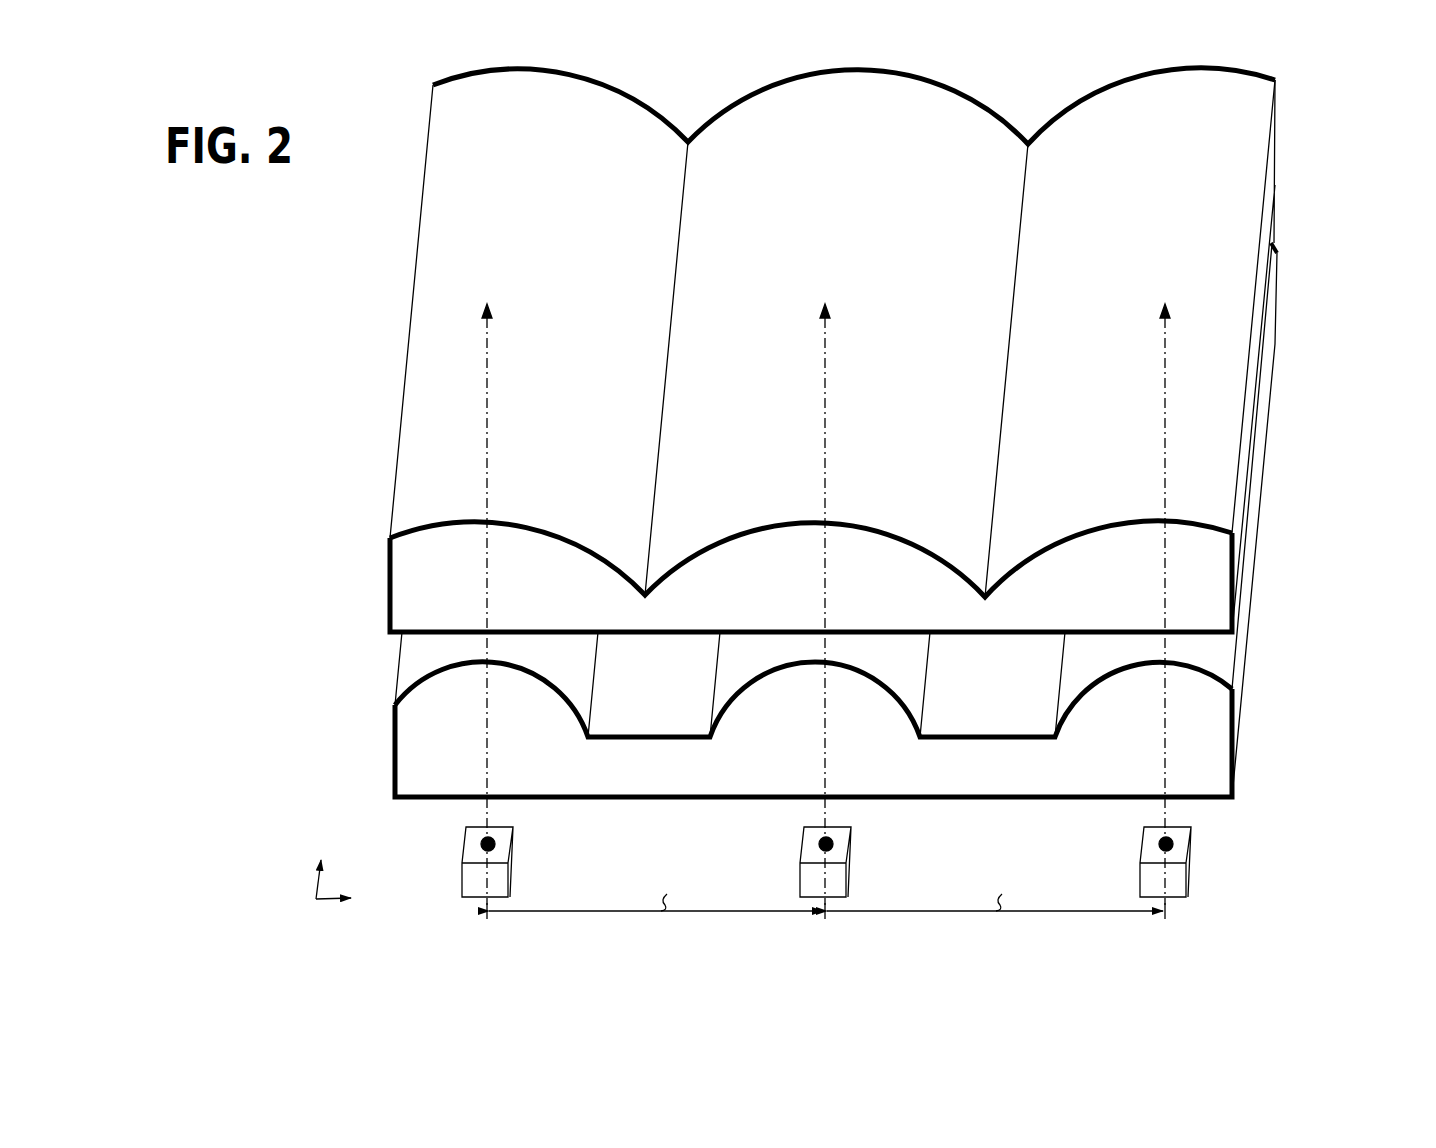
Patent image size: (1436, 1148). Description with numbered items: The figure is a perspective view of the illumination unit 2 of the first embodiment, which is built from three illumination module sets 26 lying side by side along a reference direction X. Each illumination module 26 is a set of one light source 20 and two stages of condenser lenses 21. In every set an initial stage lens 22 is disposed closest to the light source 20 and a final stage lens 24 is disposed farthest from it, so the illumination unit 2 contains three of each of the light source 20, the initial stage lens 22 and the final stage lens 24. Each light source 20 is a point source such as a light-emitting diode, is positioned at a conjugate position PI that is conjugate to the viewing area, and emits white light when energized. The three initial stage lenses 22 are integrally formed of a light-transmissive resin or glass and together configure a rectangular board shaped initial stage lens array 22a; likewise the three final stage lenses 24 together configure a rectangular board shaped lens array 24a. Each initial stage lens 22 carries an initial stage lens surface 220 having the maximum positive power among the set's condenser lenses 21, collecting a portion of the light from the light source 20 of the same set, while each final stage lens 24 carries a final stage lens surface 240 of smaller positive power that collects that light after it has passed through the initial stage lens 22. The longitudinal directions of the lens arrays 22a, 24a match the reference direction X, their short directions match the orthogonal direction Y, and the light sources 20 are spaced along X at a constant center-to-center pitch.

The illumination unit 2 is at (398, 146).
The light source 20 is at (818, 880).
The condenser lenses 21 is at (820, 432).
The initial stage lens 22 is at (787, 700).
The final stage lens 24 is at (791, 548).
The illumination module 26 is at (767, 380).
The initial stage lens surface 220 is at (552, 682).
The final stage lens surface 240 is at (530, 522).
The initial stage lens array 22a is at (1268, 387).
The lens array 24a is at (1268, 205).
The conjugate position PI is at (493, 841).